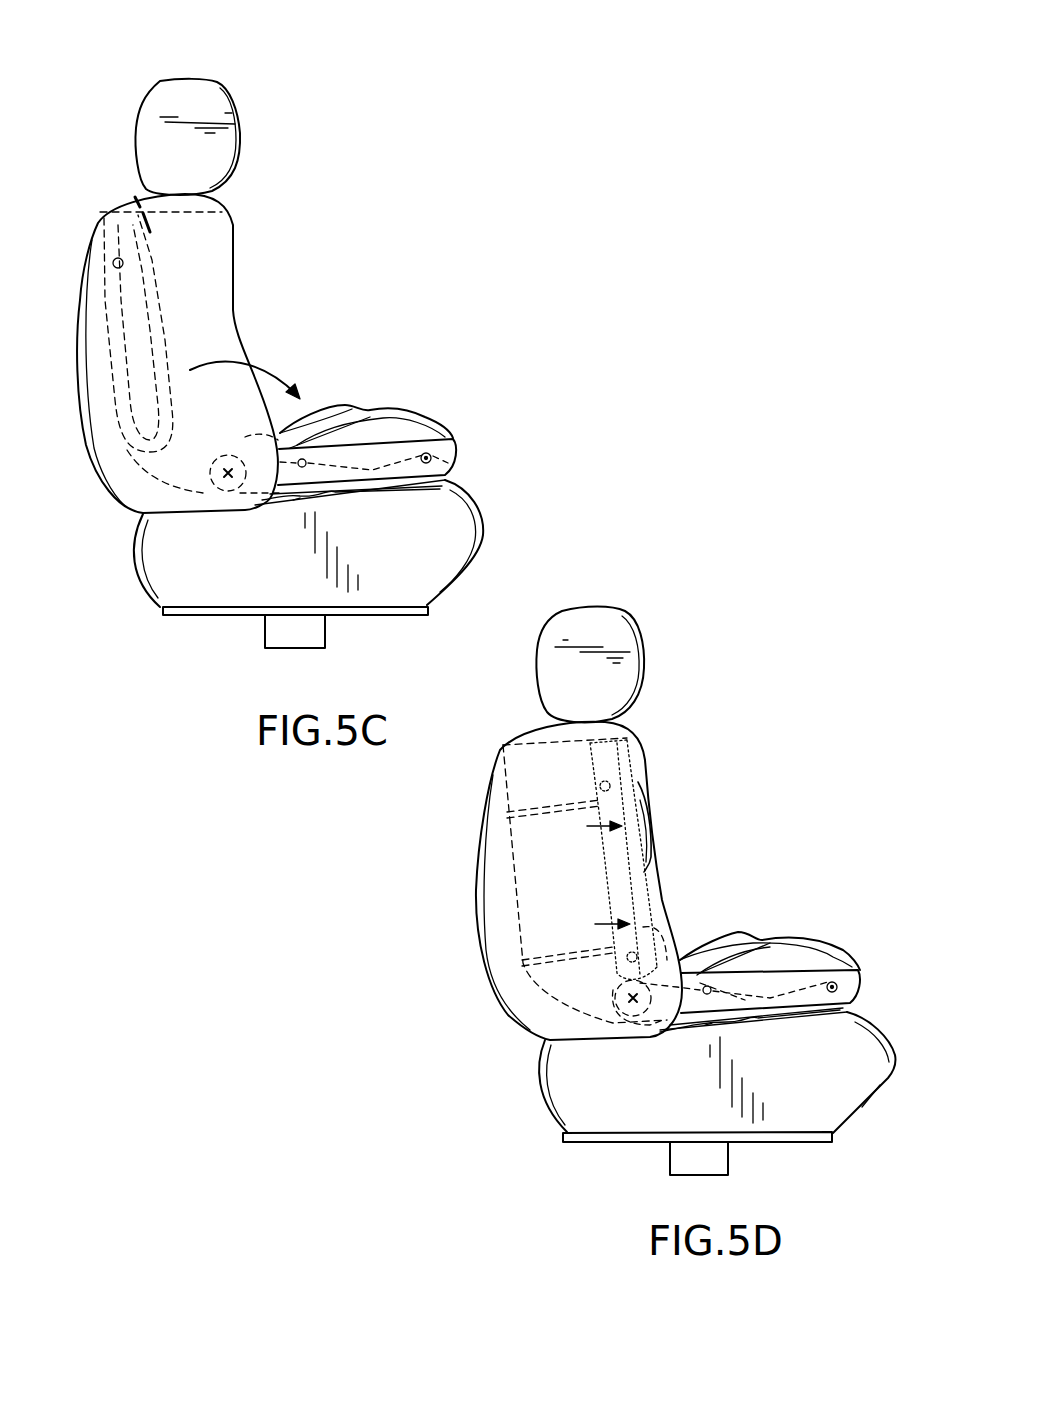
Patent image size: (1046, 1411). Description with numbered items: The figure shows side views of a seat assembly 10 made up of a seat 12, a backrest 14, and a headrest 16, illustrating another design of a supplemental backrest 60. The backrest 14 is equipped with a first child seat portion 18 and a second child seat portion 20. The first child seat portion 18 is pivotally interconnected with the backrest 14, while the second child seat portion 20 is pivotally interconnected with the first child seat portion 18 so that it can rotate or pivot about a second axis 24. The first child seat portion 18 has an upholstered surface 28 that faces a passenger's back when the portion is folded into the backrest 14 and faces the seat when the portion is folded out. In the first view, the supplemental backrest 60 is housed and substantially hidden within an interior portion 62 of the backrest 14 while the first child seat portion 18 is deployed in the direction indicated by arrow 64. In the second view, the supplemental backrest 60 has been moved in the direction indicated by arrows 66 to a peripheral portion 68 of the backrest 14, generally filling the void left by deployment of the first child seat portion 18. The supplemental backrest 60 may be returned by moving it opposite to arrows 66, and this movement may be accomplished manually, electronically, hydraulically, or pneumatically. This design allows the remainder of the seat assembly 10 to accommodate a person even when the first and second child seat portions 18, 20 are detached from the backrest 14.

In FIG. 5C, the seat assembly 10 is at (505, 188).
In FIG. 5D, the seat assembly 10 is at (752, 732).
In FIG. 5C, the seat 12 is at (480, 502).
In FIG. 5D, the seat 12 is at (547, 1120).
In FIG. 5C, the backrest 14 is at (233, 228).
In FIG. 5D, the backrest 14 is at (478, 862).
In FIG. 5C, the headrest 16 is at (193, 80).
In FIG. 5D, the headrest 16 is at (585, 605).
In FIG. 5C, the first child seat portion 18 is at (455, 448).
In FIG. 5D, the first child seat portion 18 is at (788, 970).
In FIG. 5C, the second child seat portion 20 is at (337, 403).
In FIG. 5D, the second child seat portion 20 is at (740, 932).
In FIG. 5C, the second axis 24 is at (428, 456).
In FIG. 5D, the second axis 24 is at (838, 987).
In FIG. 5C, the upholstered surface 28 is at (293, 500).
In FIG. 5D, the upholstered surface 28 is at (705, 1025).
In FIG. 5C, the supplemental backrest 60 is at (110, 350).
In FIG. 5D, the supplemental backrest 60 is at (650, 828).
In FIG. 5C, the interior portion 62 is at (133, 193).
In FIG. 5C, the arrow 64 is at (263, 364).
In FIG. 5D, the arrows 66 is at (587, 826).
In FIG. 5D, the peripheral portion 68 is at (638, 780).